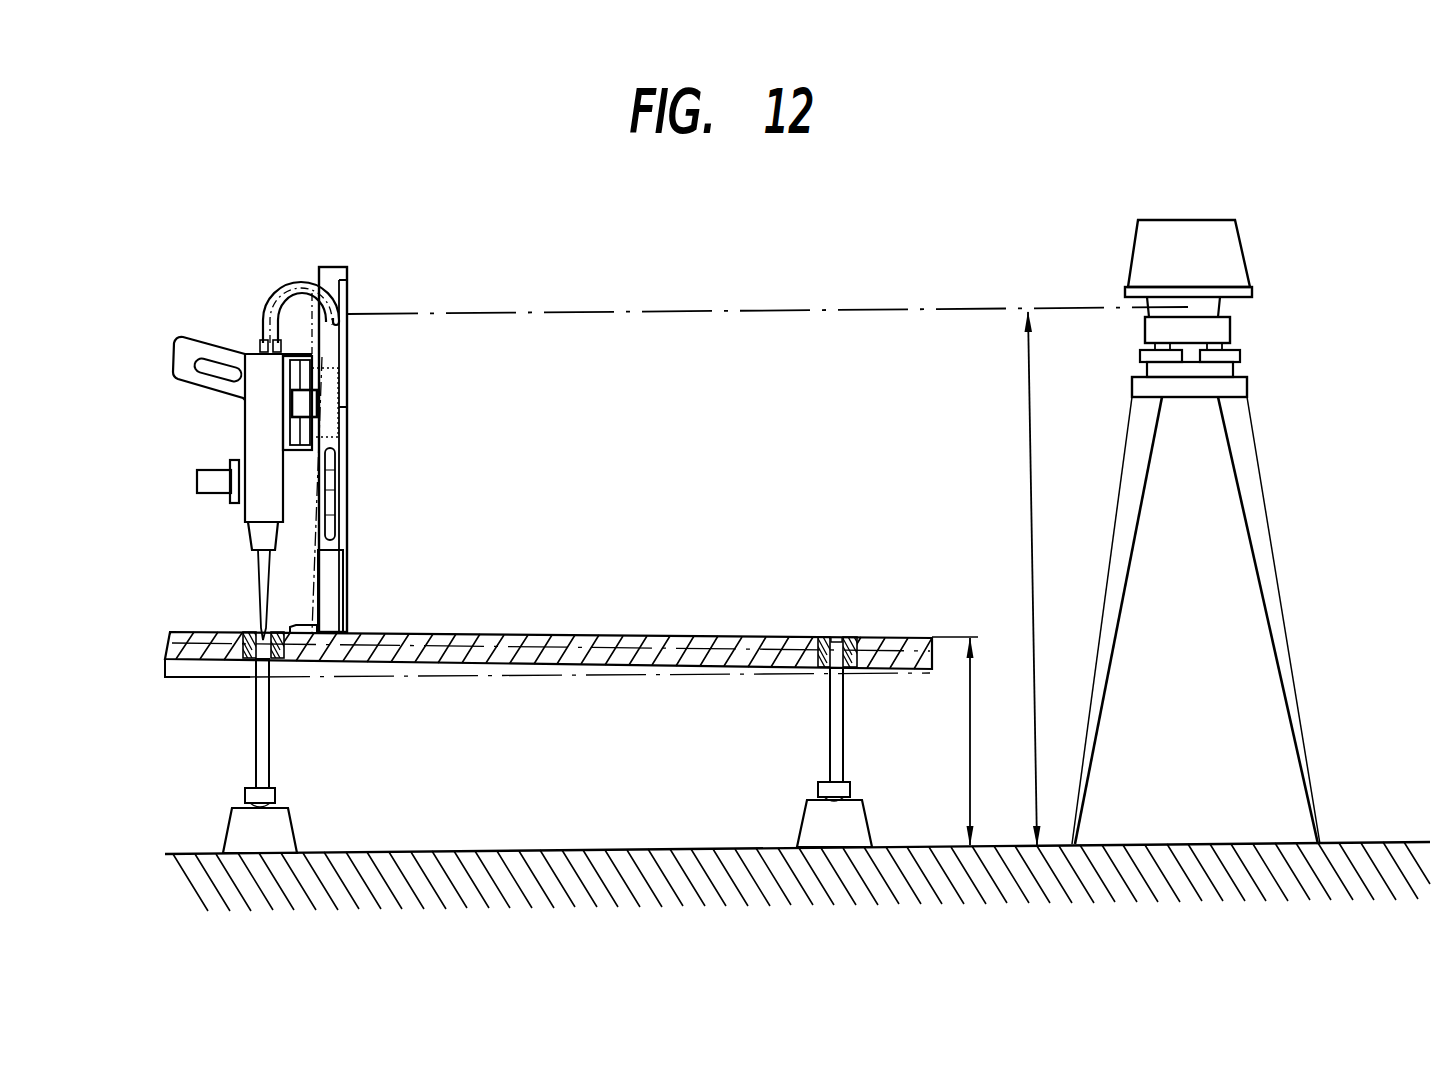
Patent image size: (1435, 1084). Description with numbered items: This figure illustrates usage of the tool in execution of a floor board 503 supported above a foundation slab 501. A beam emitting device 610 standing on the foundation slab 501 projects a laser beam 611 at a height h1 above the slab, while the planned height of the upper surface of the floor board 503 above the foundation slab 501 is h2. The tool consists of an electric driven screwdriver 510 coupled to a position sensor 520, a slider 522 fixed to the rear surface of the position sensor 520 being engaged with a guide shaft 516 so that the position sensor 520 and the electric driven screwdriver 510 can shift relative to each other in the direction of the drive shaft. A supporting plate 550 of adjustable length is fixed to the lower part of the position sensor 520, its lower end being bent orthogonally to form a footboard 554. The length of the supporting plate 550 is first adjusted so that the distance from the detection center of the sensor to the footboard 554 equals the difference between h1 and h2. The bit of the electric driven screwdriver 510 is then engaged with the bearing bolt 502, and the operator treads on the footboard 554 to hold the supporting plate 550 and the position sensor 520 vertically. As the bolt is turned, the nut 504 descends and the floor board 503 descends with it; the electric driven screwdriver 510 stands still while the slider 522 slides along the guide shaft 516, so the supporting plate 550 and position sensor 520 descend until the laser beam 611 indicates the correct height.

The foundation slab 501 is at (538, 848).
The bearing bolt 502 is at (268, 740).
The floor board 503 is at (590, 636).
The nut 504 is at (252, 640).
The electric driven screwdriver 510 is at (250, 428).
The guide shaft 516 is at (308, 375).
The position sensor 520 is at (348, 275).
The slider 522 is at (305, 408).
The supporting plate 550 is at (360, 502).
The footboard 554 is at (295, 628).
The beam emitting device 610 is at (1262, 236).
The laser beam 611 is at (555, 312).
The height of laser beam h1 is at (1032, 517).
The planned height of floor board upper surface h2 is at (972, 712).